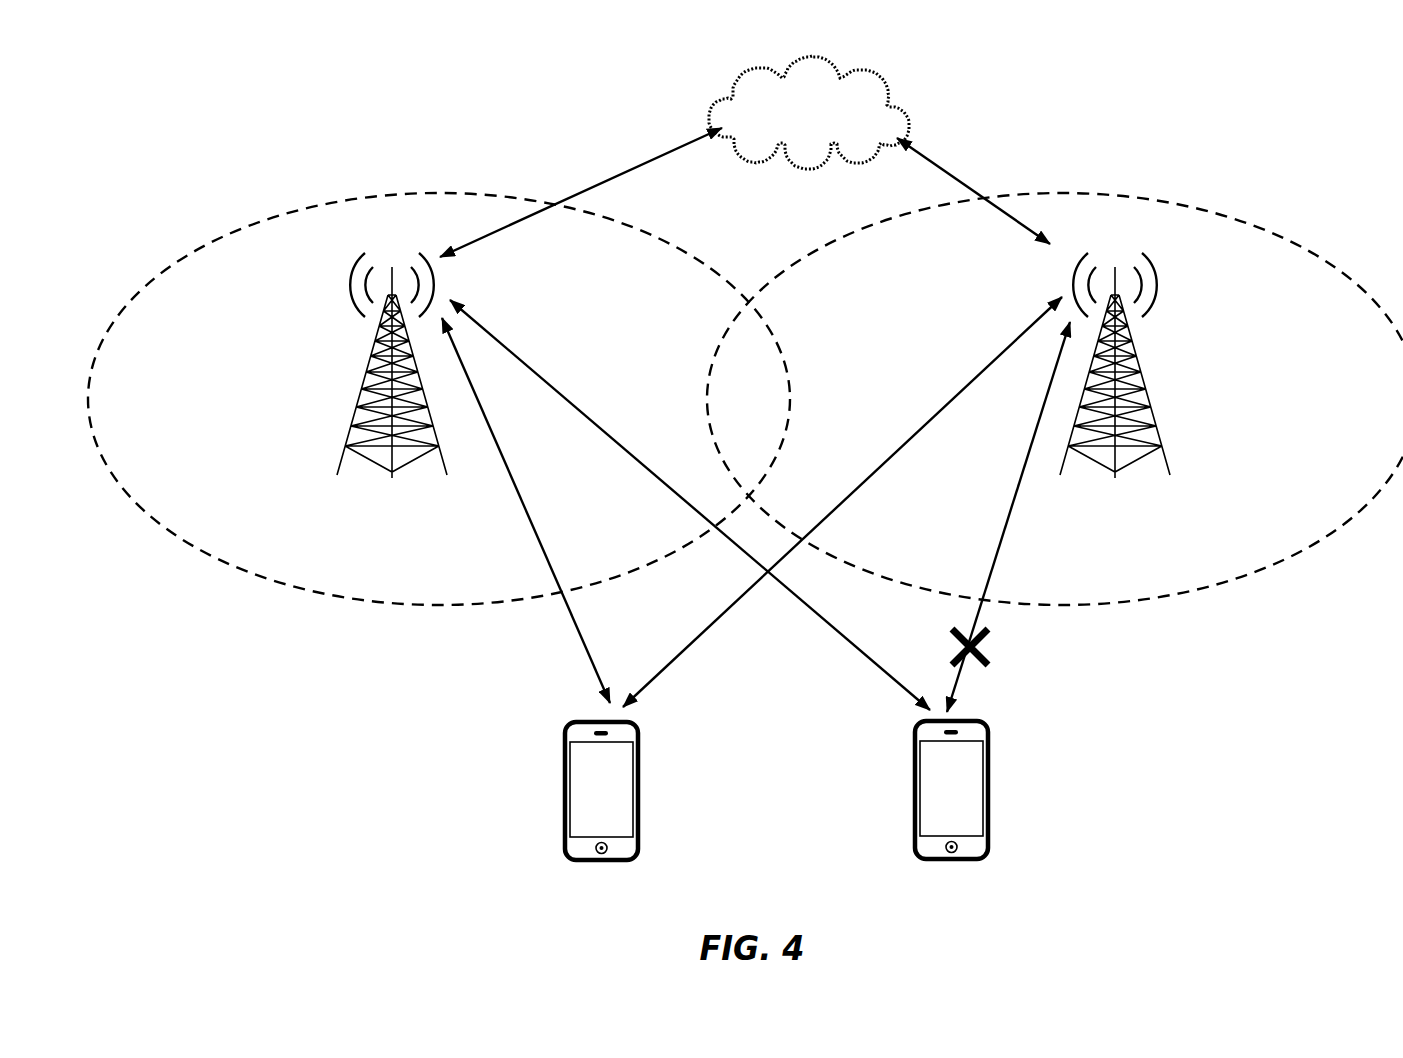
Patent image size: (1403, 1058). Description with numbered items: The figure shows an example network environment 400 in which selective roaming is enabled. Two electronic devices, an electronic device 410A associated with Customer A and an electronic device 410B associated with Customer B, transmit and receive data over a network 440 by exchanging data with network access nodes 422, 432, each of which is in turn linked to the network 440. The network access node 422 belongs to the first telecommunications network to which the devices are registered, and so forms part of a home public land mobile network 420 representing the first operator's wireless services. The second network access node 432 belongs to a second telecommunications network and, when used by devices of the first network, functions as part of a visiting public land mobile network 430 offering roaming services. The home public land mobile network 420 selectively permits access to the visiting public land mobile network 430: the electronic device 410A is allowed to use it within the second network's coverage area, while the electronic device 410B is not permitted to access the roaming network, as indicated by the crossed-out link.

The network environment 400 is at (1338, 102).
The electronic device 410A is at (557, 916).
The electronic device 410B is at (977, 916).
The home public land mobile network 420 is at (202, 394).
The network access node 422 is at (355, 552).
The visiting public land mobile network 430 is at (1401, 396).
The network access node 432 is at (1150, 552).
The network 440 is at (791, 138).